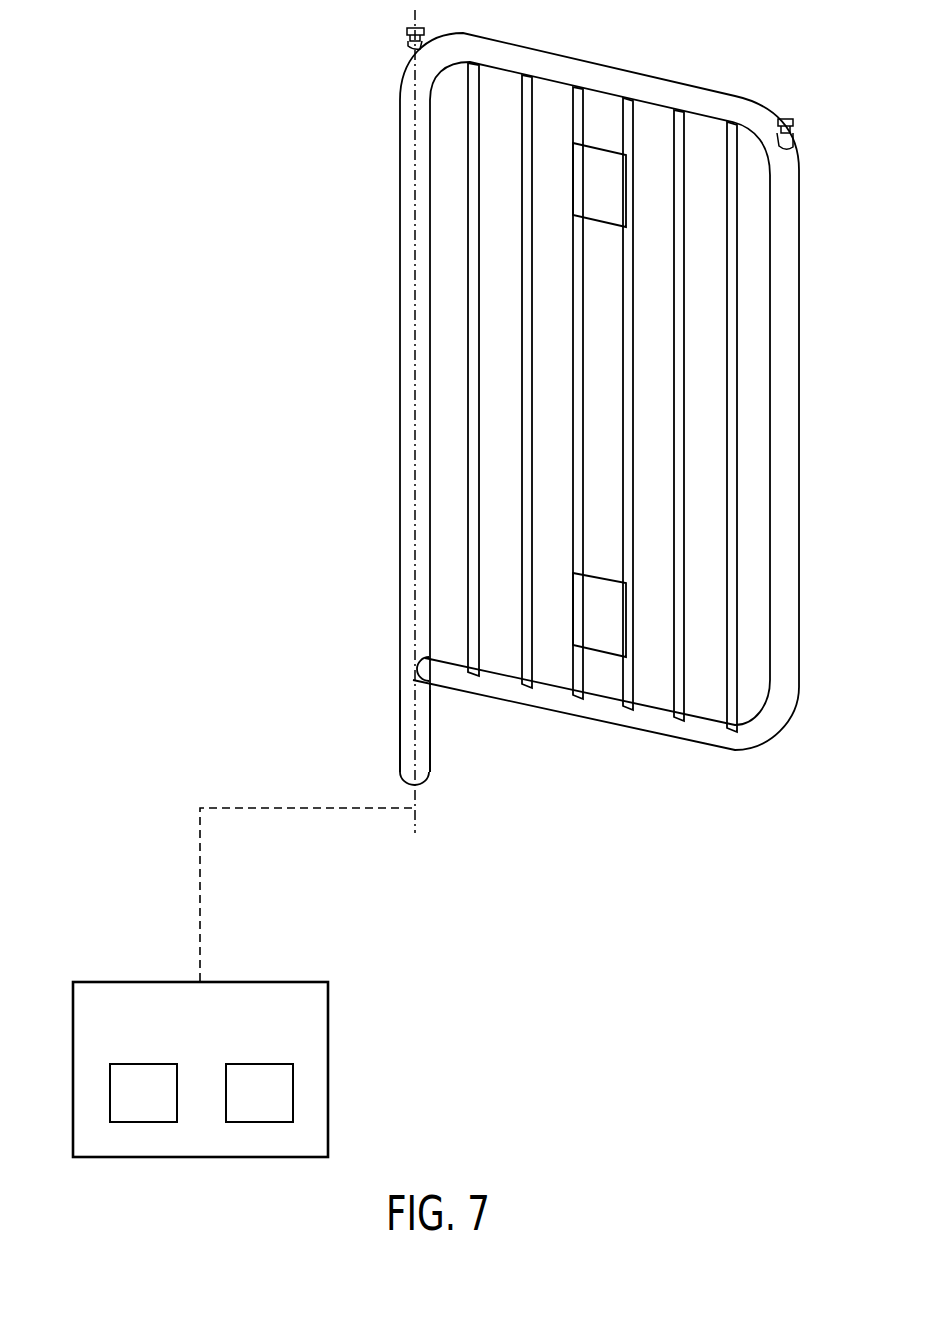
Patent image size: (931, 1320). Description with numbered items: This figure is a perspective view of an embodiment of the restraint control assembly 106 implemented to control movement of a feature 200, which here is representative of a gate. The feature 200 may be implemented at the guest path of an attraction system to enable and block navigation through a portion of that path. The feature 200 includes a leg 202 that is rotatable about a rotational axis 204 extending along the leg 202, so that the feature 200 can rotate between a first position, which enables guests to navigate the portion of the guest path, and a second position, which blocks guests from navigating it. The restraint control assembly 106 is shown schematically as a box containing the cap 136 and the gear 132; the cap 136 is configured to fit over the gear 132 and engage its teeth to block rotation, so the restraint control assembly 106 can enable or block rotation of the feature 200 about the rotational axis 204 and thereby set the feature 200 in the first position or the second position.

The feature 200 is at (278, 99).
The leg 202 is at (400, 742).
The rotational axis 204 is at (415, 795).
The restraint control assembly 106 is at (230, 982).
The cap 136 is at (159, 1122).
The gear 132 is at (273, 1122).